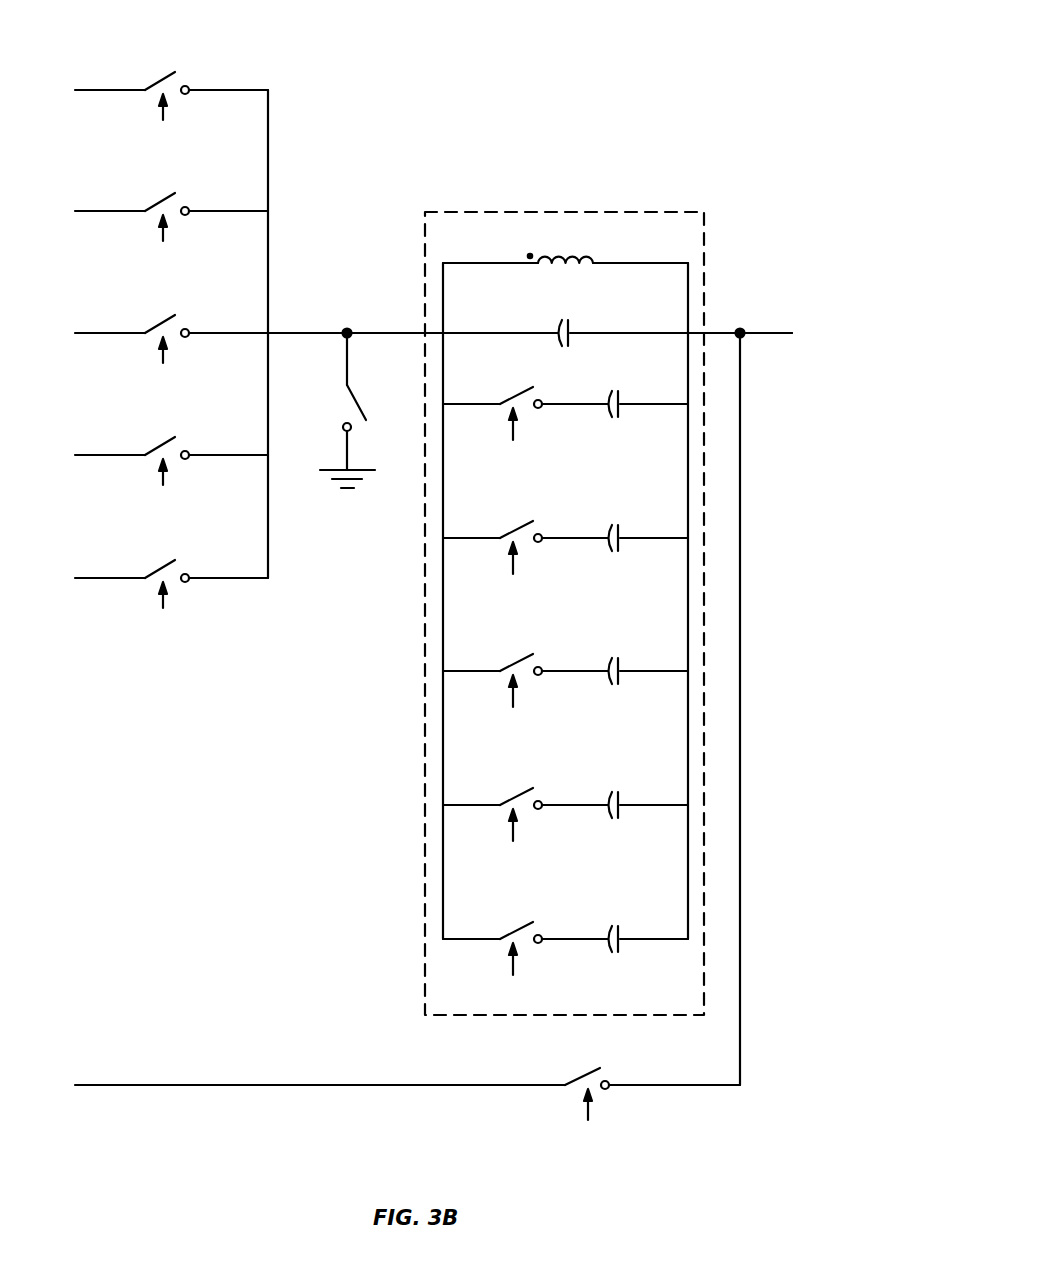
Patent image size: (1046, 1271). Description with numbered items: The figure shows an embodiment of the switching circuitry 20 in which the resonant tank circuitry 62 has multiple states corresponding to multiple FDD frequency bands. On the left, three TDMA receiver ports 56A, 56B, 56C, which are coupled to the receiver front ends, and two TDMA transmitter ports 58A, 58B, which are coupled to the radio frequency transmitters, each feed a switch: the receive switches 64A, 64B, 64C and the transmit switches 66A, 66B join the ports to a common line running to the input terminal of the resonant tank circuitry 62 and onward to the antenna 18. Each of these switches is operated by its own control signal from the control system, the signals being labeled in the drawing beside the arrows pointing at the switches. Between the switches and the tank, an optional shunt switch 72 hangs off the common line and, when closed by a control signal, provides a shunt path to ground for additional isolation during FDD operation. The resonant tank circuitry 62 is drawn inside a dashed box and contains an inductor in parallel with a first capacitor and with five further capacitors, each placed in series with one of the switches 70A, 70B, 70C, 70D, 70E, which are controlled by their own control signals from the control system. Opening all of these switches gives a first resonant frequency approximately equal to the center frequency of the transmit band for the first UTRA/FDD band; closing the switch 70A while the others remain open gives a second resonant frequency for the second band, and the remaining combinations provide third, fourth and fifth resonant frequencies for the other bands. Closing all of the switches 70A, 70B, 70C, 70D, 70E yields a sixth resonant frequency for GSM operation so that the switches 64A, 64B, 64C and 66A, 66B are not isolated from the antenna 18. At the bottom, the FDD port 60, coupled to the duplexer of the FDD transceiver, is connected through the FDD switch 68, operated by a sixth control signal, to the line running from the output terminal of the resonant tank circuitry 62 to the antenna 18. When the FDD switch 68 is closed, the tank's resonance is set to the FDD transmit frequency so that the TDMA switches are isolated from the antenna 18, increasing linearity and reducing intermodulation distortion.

The switching circuitry 20 is at (663, 70).
The antenna 18 is at (820, 336).
The TDMA receiver port 56A is at (103, 90).
The TDMA receiver port 56B is at (103, 211).
The TDMA receiver port 56C is at (103, 333).
The TDMA transmitter port 58A is at (103, 455).
The TDMA transmitter port 58B is at (103, 578).
The FDD port 60 is at (96, 1085).
The resonant tank circuitry 62 is at (645, 212).
The receive switch 64A is at (177, 68).
The receive switch 64B is at (177, 189).
The receive switch 64C is at (177, 311).
The transmit switch 66A is at (177, 433).
The transmit switch 66B is at (177, 556).
The FDD switch 68 is at (592, 1072).
The switch 70A is at (530, 386).
The switch 70B is at (530, 520).
The switch 70C is at (530, 653).
The switch 70D is at (530, 787).
The switch 70E is at (530, 921).
The shunt switch 72 is at (362, 402).